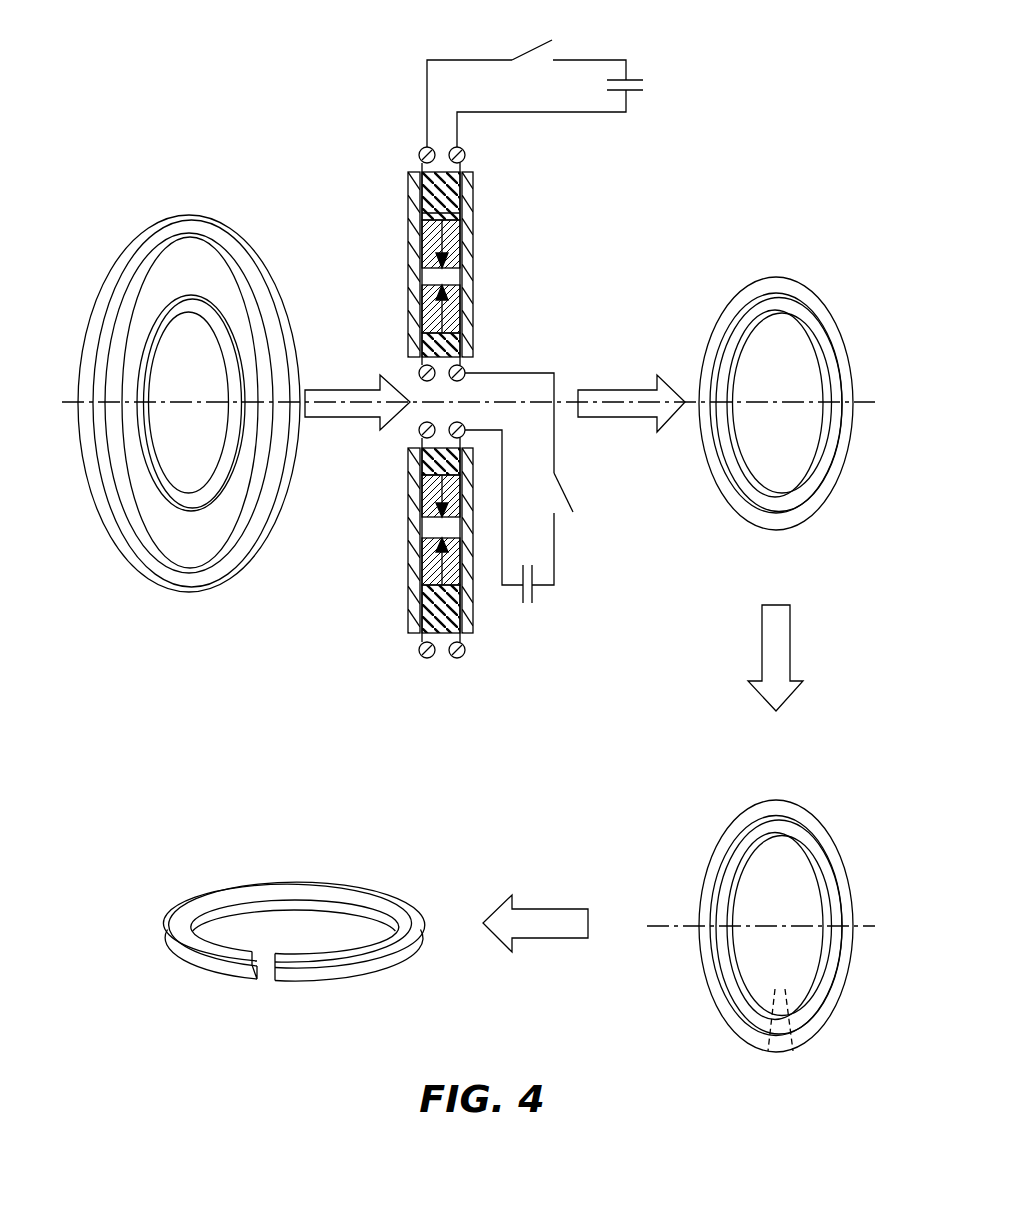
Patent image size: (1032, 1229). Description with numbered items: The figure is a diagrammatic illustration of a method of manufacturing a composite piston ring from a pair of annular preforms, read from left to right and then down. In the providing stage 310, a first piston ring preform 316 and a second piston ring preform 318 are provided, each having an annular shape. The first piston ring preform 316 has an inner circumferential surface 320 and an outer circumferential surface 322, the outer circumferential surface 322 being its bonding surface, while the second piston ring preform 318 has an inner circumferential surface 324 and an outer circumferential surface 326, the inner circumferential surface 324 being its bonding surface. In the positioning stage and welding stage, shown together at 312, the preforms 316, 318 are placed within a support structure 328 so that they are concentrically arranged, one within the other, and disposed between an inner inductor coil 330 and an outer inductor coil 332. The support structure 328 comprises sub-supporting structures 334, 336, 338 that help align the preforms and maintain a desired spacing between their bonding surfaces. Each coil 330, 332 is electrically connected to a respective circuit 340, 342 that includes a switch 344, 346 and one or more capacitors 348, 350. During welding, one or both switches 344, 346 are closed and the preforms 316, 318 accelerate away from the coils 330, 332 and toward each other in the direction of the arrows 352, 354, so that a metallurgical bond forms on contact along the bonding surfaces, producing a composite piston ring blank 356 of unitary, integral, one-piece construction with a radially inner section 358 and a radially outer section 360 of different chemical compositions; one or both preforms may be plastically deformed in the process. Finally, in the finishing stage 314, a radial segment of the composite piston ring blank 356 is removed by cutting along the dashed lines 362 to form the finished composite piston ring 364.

The providing stage 310 is at (110, 212).
The positioning and welding stage 312 is at (614, 206).
The finishing stage 314 is at (711, 795).
The first piston ring preform 316 is at (190, 296).
The second piston ring preform 318 is at (184, 215).
The inner circumferential surface 320 is at (232, 365).
The outer circumferential surface 322 is at (138, 446).
The inner circumferential surface 324 is at (237, 545).
The outer circumferential surface 326 is at (142, 574).
The support structure 328 is at (473, 176).
The inner inductor coil 330 is at (419, 433).
The outer inductor coil 332 is at (419, 155).
The sub-supporting structure 334 is at (425, 604).
The sub-supporting structure 336 is at (474, 262).
The sub-supporting structure 338 is at (462, 332).
The circuit 340 is at (556, 450).
The circuit 342 is at (427, 58).
The switch 344 is at (568, 502).
The switch 346 is at (533, 47).
The capacitor 348 is at (533, 597).
The capacitor 350 is at (638, 82).
The arrow 352 is at (468, 307).
The arrow 354 is at (462, 212).
The composite piston ring blank 356 is at (772, 277).
The radially inner section 358 is at (813, 320).
The radially outer section 360 is at (797, 522).
The dashed lines 362 is at (767, 1059).
The finished composite piston ring 364 is at (193, 890).